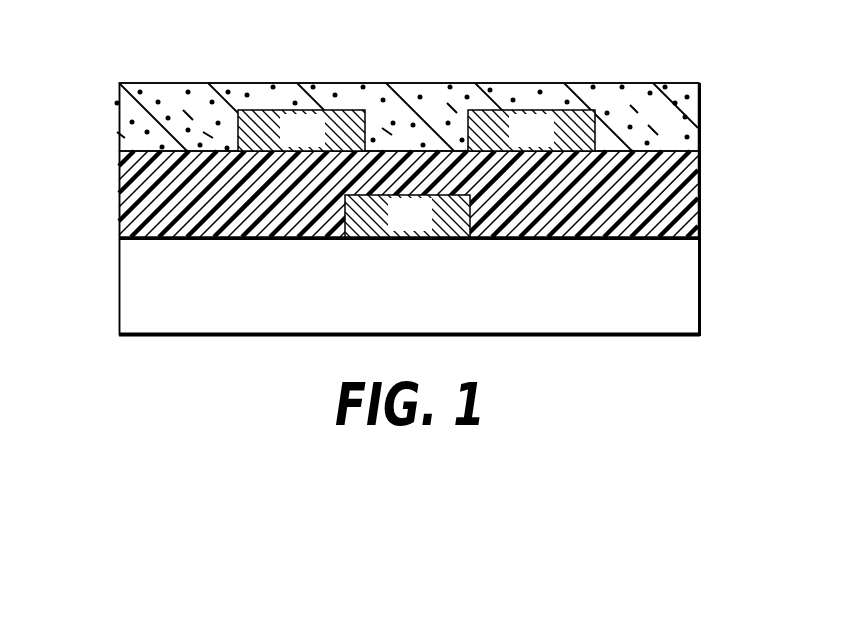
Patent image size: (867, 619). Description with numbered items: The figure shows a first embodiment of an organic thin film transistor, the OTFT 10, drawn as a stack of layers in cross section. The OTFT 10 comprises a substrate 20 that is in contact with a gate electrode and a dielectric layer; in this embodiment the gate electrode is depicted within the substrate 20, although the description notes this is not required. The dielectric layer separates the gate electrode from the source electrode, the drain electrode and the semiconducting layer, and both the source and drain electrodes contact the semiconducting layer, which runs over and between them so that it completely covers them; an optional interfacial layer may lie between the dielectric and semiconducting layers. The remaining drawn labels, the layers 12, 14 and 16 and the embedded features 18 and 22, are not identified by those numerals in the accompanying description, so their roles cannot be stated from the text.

The organic thin film transistor 10 is at (143, 38).
The upper dielectric layer 12 is at (700, 118).
The intermediate layer stack 14 is at (112, 152).
The substrate 16 is at (700, 287).
The buried conductive feature 18 is at (426, 227).
The substrate 20 is at (320, 142).
The contact 22 is at (549, 142).